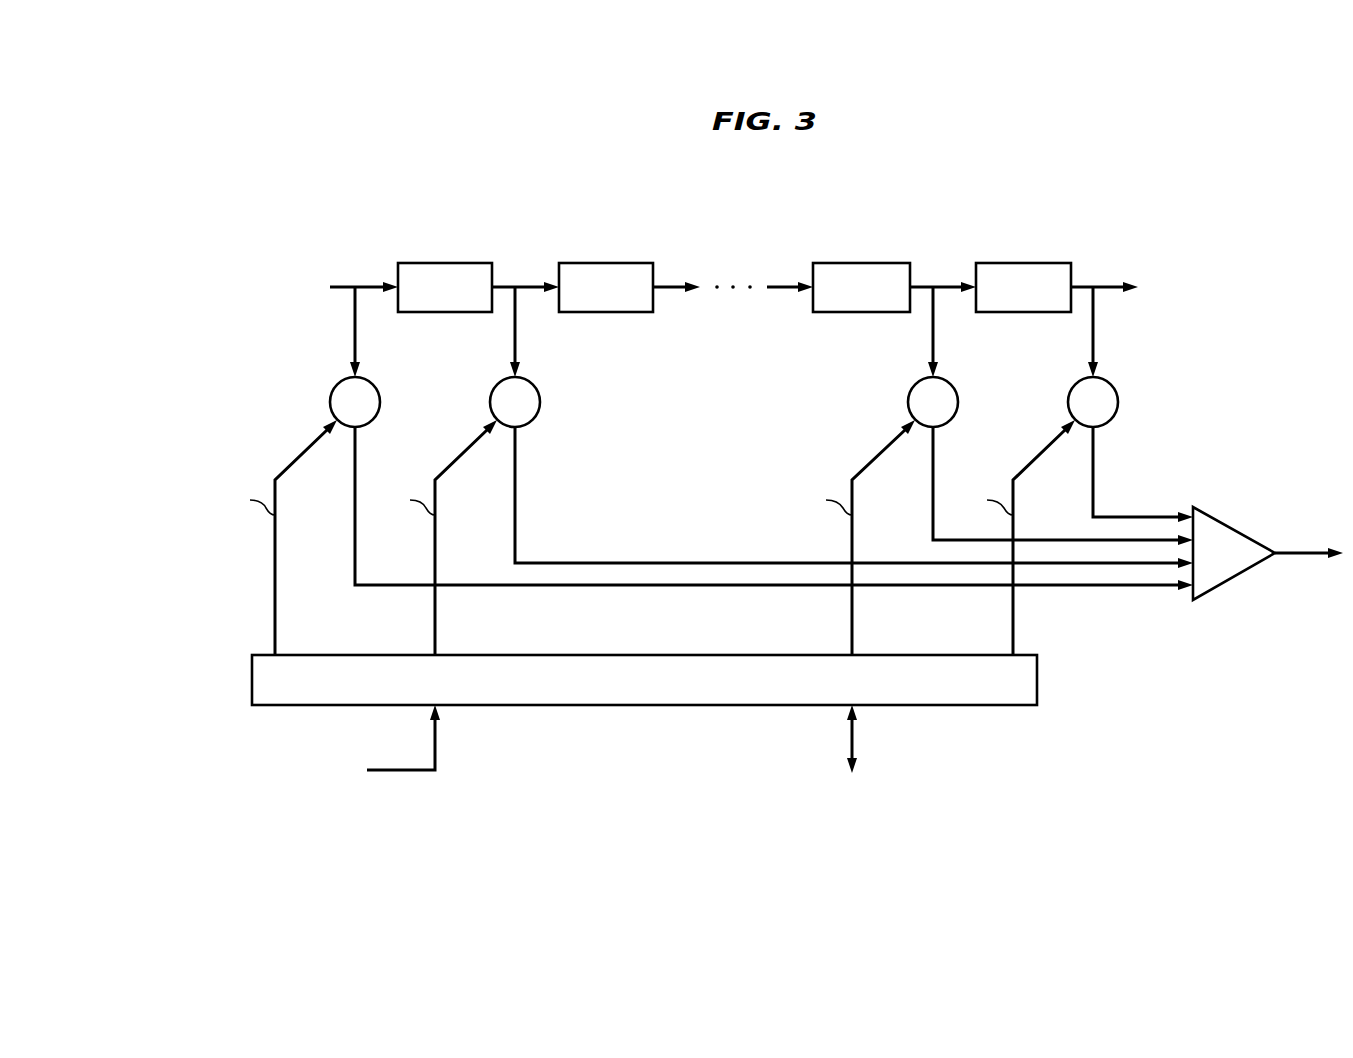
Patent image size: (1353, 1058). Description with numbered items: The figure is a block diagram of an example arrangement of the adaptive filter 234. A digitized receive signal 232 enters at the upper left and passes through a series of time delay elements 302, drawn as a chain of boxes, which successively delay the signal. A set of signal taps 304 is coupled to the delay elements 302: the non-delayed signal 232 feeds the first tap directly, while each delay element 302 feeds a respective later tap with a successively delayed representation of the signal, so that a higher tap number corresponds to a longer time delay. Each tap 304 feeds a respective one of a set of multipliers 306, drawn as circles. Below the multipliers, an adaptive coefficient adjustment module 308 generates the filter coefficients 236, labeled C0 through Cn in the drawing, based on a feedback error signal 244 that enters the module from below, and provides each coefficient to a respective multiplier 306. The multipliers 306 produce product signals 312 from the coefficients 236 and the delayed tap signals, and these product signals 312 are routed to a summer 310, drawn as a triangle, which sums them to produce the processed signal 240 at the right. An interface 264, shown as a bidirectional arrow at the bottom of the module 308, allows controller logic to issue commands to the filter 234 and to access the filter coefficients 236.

The adaptive filter 234 is at (782, 169).
The filter coefficients 236 is at (243, 366).
The digitized receive signal 232 is at (345, 286).
The time delay elements 302 is at (1245, 237).
The signal taps 304 is at (1245, 310).
The multipliers 306 is at (374, 385).
The adaptive coefficient adjustment module 308 is at (641, 655).
The product signals 312 is at (1138, 498).
The summer 310 is at (1232, 522).
The processed signal 240 is at (1294, 556).
The feedback error signal 244 is at (397, 772).
The interface 264 is at (855, 745).